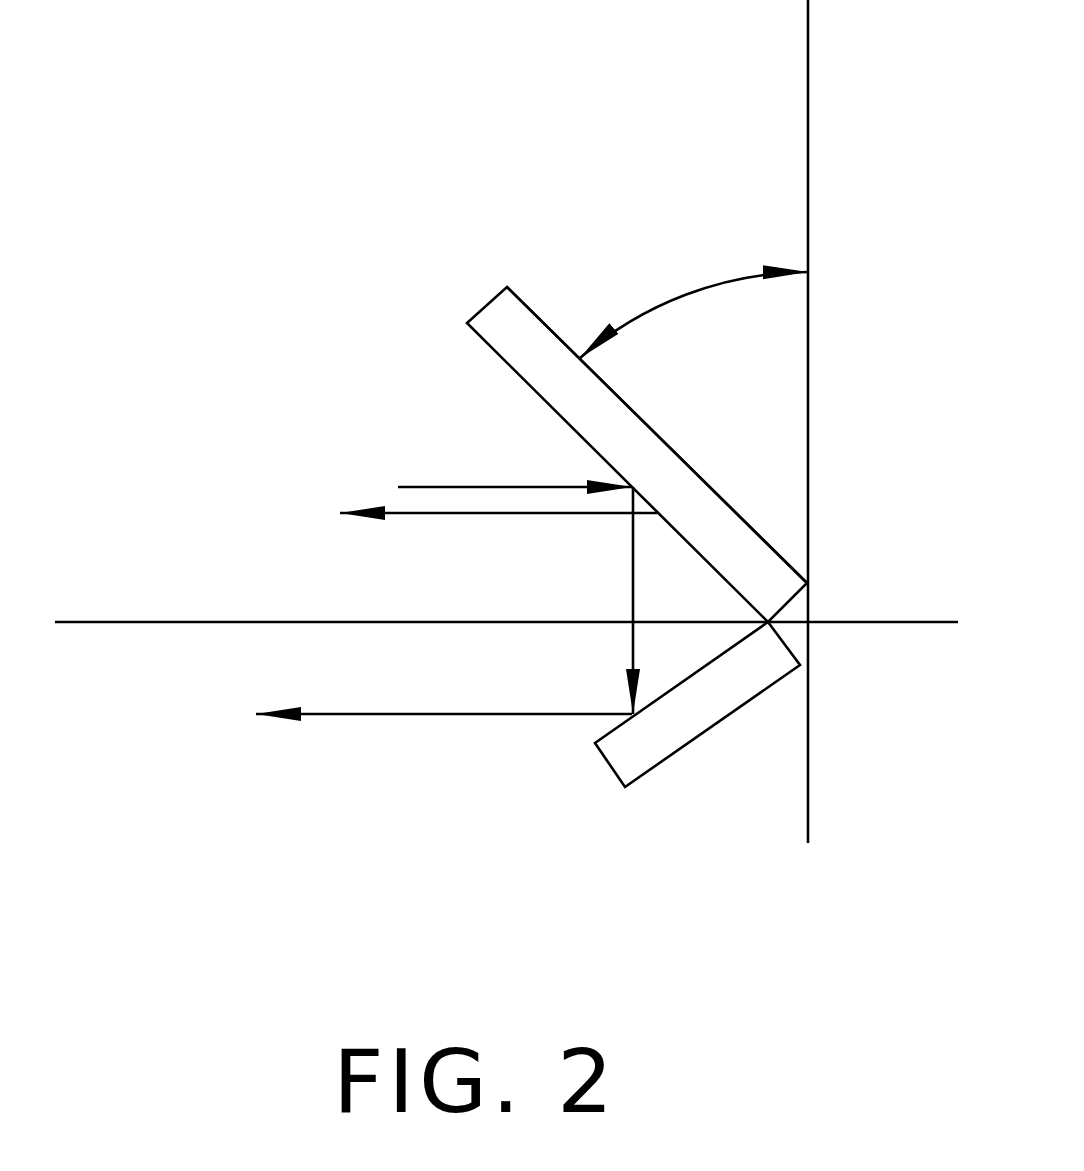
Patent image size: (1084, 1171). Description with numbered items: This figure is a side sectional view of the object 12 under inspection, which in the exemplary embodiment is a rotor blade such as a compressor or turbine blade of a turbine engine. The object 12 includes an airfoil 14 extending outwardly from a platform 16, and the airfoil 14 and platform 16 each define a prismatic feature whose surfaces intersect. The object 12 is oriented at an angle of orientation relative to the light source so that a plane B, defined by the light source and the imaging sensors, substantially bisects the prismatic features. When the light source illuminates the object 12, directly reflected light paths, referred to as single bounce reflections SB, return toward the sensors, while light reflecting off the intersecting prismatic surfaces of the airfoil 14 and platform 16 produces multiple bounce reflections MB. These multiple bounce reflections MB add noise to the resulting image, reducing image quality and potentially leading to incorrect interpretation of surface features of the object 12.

The object 12 is at (489, 267).
The airfoil 14 is at (535, 312).
The platform 16 is at (713, 728).
The plane B is at (232, 620).
The single bounce reflections SB is at (483, 516).
The multiple bounce reflections MB is at (427, 715).